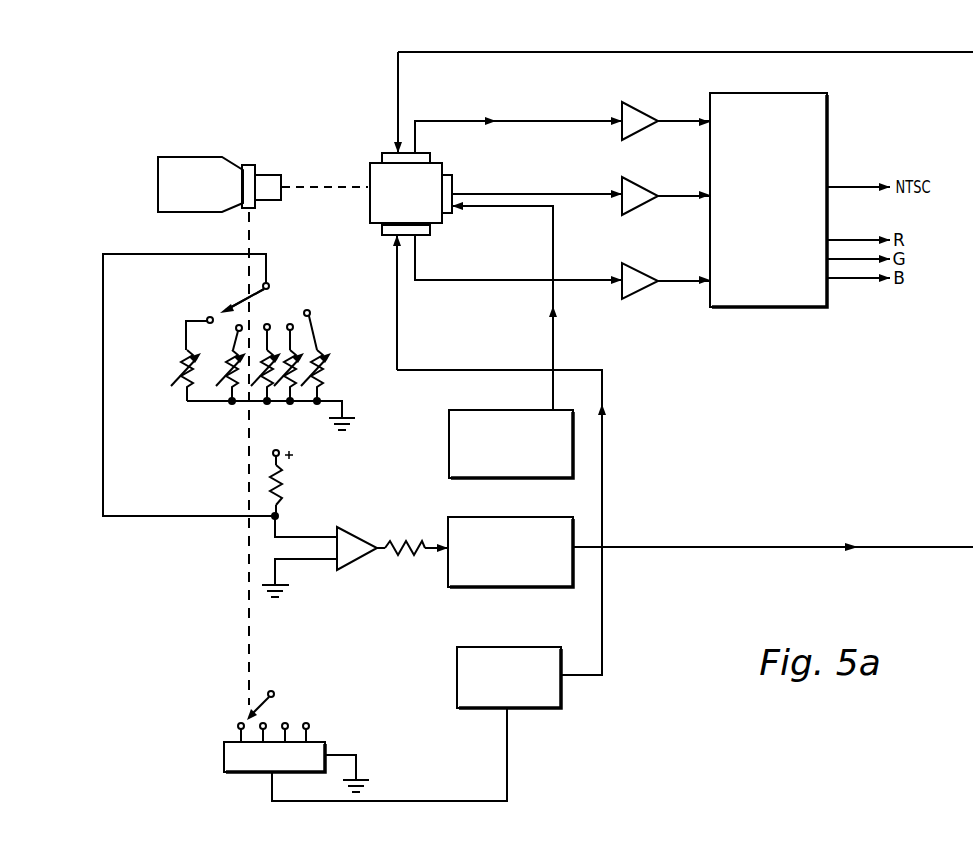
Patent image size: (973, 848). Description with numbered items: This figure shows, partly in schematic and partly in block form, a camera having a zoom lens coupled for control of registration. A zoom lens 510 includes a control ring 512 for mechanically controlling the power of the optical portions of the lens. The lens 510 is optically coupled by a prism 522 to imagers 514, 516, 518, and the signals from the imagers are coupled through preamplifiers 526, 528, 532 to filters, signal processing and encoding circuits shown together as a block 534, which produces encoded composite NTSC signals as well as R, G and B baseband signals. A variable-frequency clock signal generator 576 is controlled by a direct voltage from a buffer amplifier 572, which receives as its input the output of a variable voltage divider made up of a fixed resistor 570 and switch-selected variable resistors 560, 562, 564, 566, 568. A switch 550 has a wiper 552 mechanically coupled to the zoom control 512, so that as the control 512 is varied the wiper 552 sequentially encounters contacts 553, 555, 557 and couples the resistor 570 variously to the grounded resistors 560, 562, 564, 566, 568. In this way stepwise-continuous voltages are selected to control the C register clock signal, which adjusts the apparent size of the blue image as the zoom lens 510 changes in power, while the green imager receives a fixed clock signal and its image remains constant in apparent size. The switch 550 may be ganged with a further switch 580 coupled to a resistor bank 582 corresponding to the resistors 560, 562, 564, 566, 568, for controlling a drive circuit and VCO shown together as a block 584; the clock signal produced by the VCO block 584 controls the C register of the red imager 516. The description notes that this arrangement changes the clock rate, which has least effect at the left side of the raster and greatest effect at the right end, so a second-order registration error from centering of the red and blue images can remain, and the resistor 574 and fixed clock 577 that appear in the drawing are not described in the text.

The zoom lens 510 is at (190, 157).
The control ring 512 is at (247, 165).
The imager 514 is at (432, 153).
The red imager 516 is at (383, 232).
The imager 518 is at (455, 180).
The prism 522 is at (370, 170).
The preamplifier 526 is at (622, 110).
The preamplifier 528 is at (622, 270).
The preamplifier 532 is at (622, 185).
The filters, signal processing and encoding circuits 534 is at (827, 115).
The switch 550 is at (277, 286).
The wiper 552 is at (250, 297).
The contact 553 is at (207, 318).
The contact 555 is at (278, 322).
The contact 557 is at (310, 311).
The variable resistor 560 is at (171, 386).
The variable resistor 562 is at (216, 386).
The variable resistor 564 is at (251, 386).
The variable resistor 566 is at (302, 388).
The variable resistor 568 is at (320, 352).
The fixed resistor 570 is at (281, 492).
The buffer amplifier 572 is at (345, 535).
The resistor 574 is at (392, 540).
The variable-frequency clock signal generator 576 is at (448, 576).
The fixed clock 577 is at (449, 458).
The further switch 580 is at (297, 678).
The resistor bank 582 is at (323, 742).
The drive circuit and VCO 584 is at (492, 647).